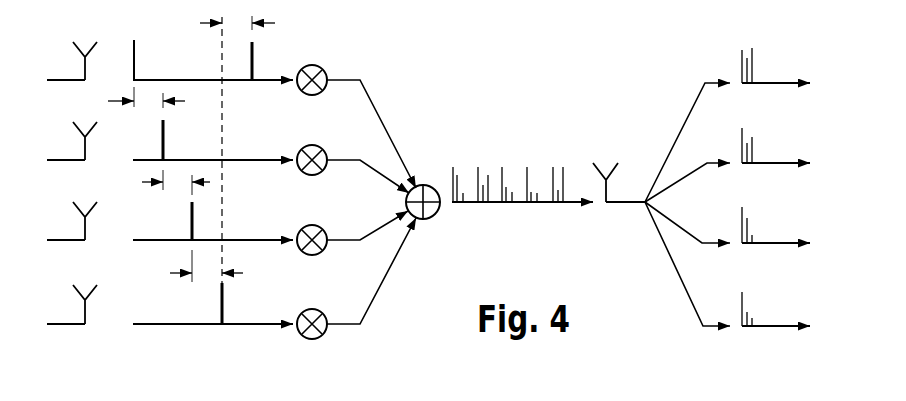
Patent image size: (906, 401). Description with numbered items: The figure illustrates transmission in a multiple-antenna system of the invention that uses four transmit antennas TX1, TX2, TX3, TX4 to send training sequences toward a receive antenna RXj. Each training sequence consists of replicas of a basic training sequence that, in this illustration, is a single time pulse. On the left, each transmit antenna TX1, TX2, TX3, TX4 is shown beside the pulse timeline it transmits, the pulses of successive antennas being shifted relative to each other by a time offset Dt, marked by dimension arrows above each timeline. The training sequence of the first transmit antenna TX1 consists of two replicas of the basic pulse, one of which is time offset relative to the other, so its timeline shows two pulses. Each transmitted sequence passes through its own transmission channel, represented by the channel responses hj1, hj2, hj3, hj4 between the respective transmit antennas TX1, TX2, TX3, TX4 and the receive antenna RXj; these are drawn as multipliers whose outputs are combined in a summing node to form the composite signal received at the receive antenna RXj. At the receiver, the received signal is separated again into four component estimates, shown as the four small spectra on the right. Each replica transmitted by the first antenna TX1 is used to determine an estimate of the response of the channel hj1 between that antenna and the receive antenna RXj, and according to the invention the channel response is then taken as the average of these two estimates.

The transmit antenna TX1 is at (79, 48).
The transmit antenna TX2 is at (79, 128).
The transmit antenna TX3 is at (79, 208).
The transmit antenna TX4 is at (79, 291).
The time offset Dt is at (191, 159).
The transmission channel response hj1 is at (356, 111).
The transmission channel response hj2 is at (353, 153).
The transmission channel response hj3 is at (352, 224).
The transmission channel response hj4 is at (356, 278).
The receive antenna RXj is at (616, 168).